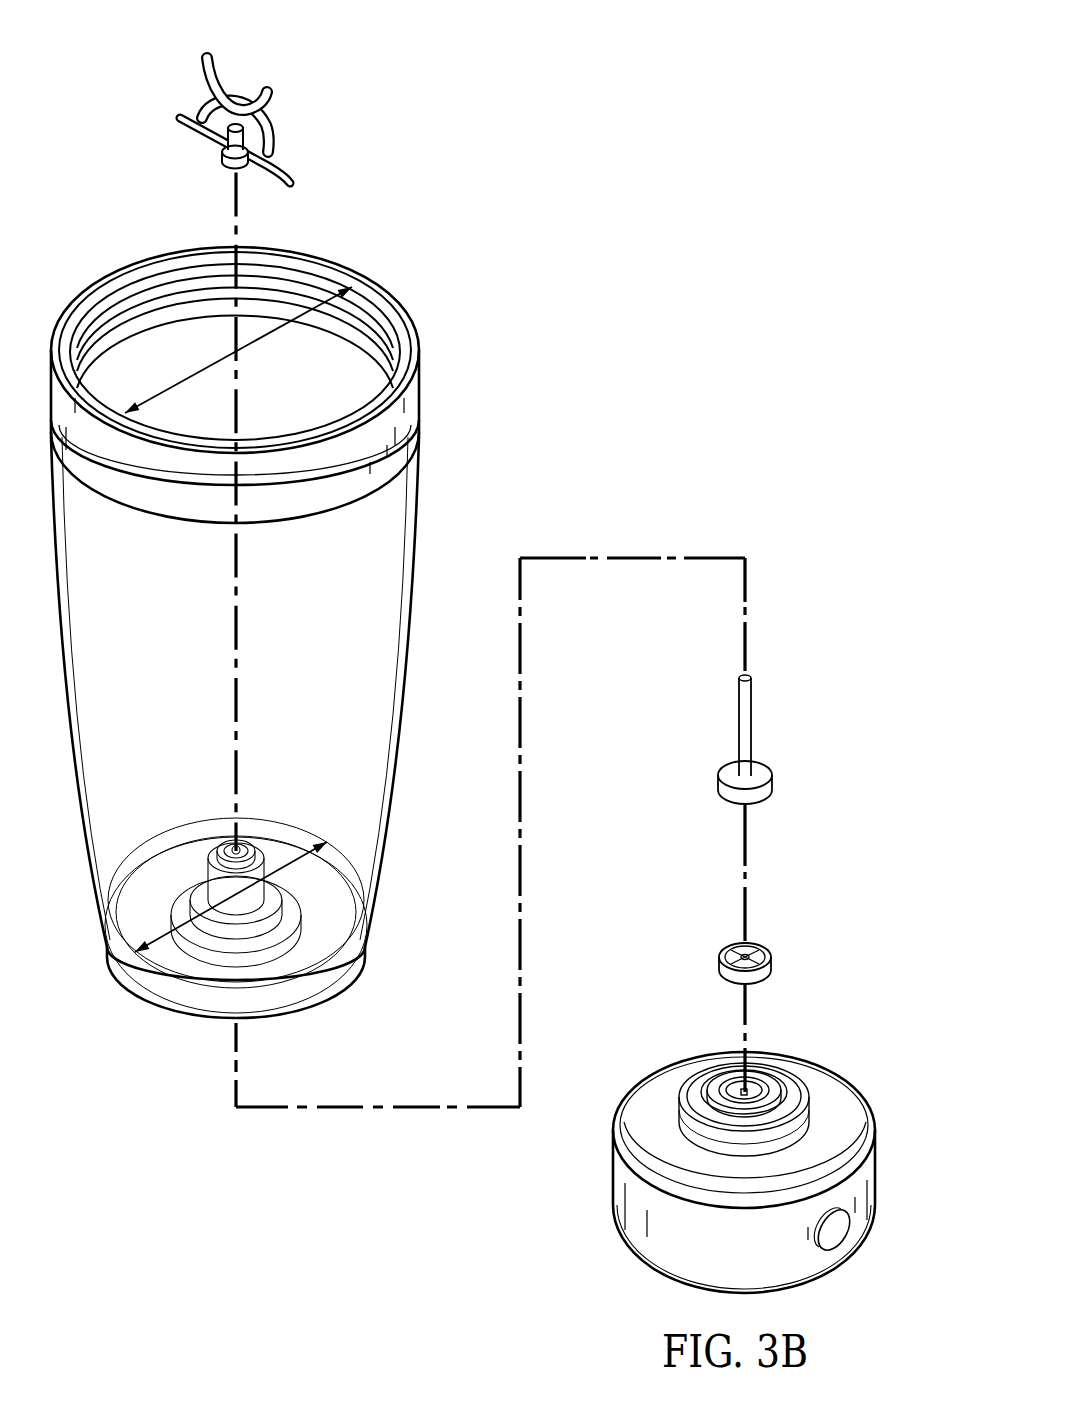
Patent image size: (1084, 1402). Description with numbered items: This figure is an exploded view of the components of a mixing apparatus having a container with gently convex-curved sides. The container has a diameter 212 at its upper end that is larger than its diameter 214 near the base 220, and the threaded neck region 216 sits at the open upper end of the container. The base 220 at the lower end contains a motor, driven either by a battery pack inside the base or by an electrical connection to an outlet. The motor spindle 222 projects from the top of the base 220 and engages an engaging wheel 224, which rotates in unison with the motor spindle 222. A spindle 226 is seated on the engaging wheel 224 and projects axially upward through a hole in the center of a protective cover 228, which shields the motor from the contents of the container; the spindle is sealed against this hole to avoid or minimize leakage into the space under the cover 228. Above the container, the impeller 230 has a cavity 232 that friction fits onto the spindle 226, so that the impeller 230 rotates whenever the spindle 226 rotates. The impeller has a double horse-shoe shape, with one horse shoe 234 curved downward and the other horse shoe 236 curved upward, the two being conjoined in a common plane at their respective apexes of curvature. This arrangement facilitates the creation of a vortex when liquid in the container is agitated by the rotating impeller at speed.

The diameter 212 is at (266, 337).
The diameter 214 is at (278, 866).
The threaded neck of container 216 is at (437, 312).
The base 220 is at (875, 1173).
The motor spindle 222 is at (753, 1092).
The engaging wheel 224 is at (770, 964).
The spindle 226 is at (753, 727).
The protective cover 228 is at (196, 868).
The impeller 230 is at (268, 130).
The cavity 232 is at (223, 169).
The horse shoe 234 is at (203, 105).
The horse shoe 236 is at (219, 62).